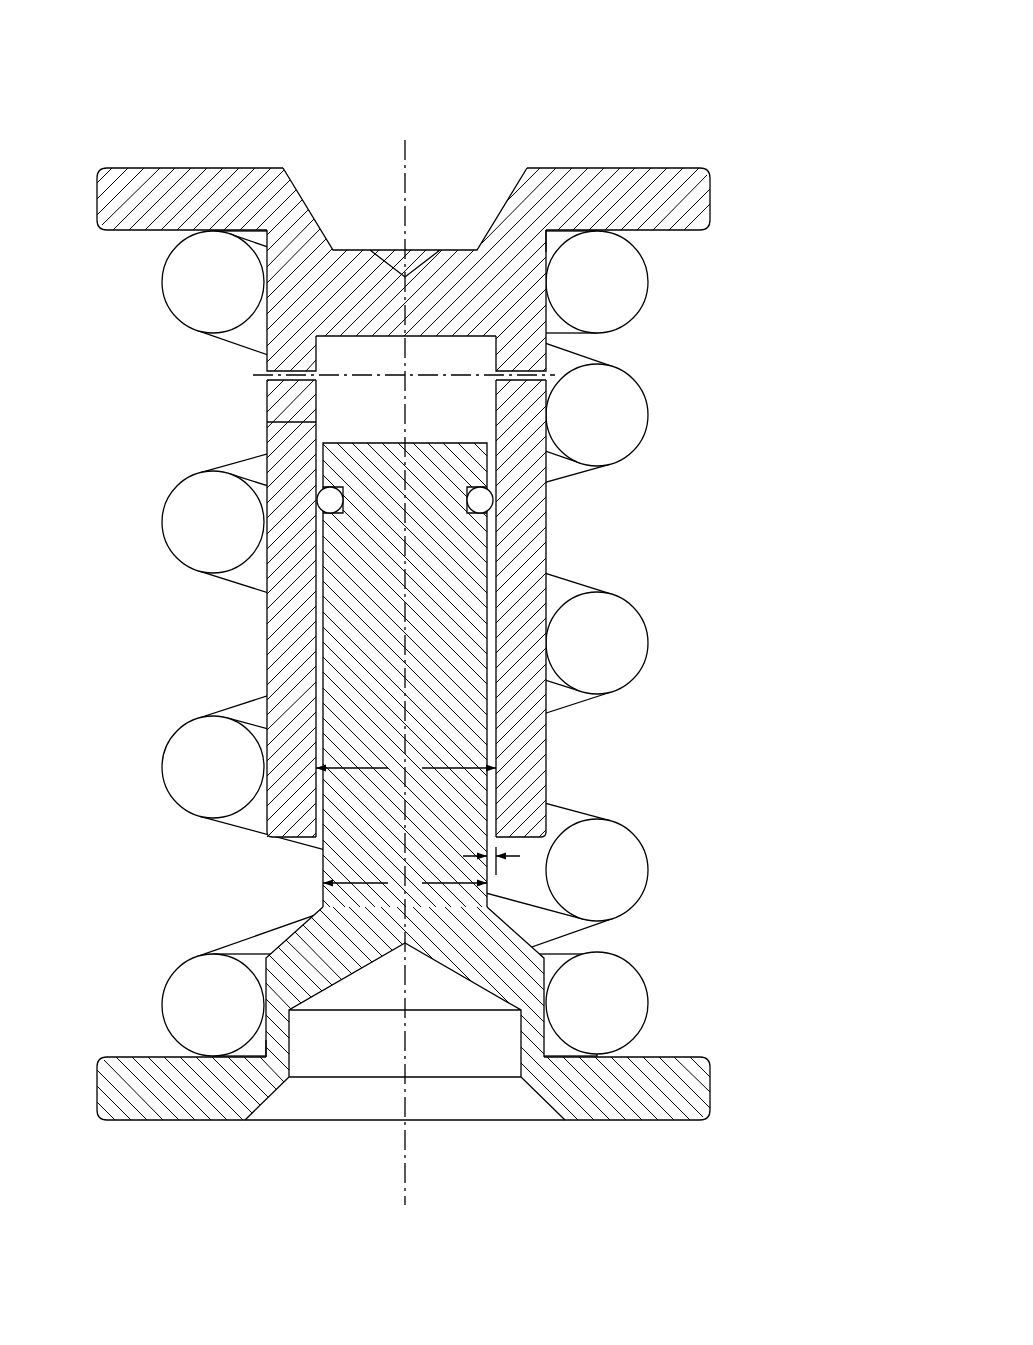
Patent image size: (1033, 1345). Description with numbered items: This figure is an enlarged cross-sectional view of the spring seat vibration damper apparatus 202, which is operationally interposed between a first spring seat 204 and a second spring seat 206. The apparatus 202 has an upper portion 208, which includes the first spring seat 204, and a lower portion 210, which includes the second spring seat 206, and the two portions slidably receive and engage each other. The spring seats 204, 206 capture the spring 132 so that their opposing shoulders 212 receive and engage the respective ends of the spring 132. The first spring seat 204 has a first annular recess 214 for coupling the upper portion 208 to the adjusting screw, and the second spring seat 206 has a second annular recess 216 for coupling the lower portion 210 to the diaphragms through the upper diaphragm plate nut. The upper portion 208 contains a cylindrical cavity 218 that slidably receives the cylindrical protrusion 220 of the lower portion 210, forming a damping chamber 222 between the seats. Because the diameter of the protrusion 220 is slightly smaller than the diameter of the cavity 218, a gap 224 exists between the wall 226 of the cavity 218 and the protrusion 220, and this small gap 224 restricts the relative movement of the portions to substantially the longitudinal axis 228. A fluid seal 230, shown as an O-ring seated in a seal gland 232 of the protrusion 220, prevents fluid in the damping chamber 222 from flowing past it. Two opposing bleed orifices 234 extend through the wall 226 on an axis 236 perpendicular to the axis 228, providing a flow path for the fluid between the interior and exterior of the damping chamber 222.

The spring 132 is at (640, 313).
The spring seat vibration damper apparatus 202 is at (686, 46).
The first spring seat 204 is at (115, 168).
The second spring seat 206 is at (120, 1121).
The upper portion 208 is at (265, 662).
The lower portion 210 is at (323, 889).
The shoulder 212 is at (548, 198).
The first annular recess 214 is at (300, 170).
The second annular recess 216 is at (288, 1055).
The cavity 218 is at (494, 340).
The protrusion 220 is at (322, 443).
The damping chamber 222 is at (483, 427).
The gap 224 is at (490, 873).
The wall 226 is at (267, 422).
The axis 228 is at (406, 1163).
The fluid seal 230 is at (493, 508).
The seal gland 232 is at (490, 535).
The bleed orifice 234 is at (548, 342).
The axis 236 is at (390, 373).